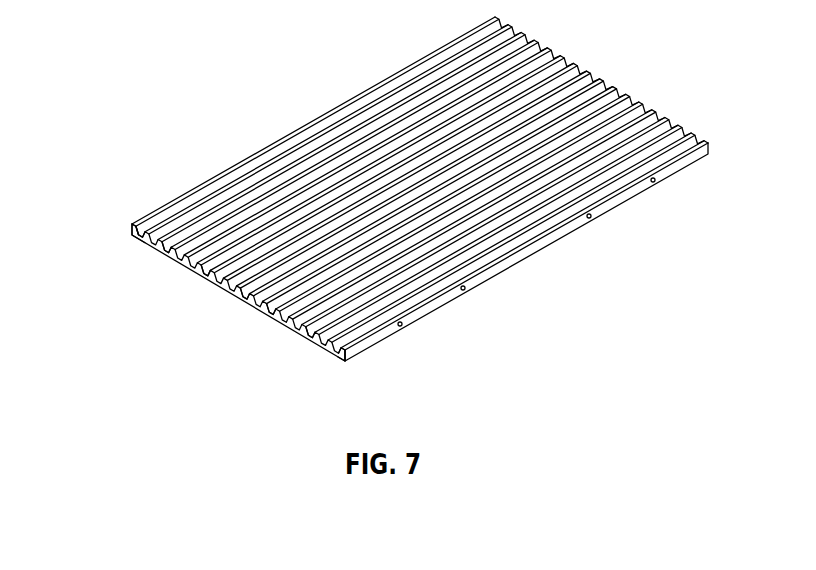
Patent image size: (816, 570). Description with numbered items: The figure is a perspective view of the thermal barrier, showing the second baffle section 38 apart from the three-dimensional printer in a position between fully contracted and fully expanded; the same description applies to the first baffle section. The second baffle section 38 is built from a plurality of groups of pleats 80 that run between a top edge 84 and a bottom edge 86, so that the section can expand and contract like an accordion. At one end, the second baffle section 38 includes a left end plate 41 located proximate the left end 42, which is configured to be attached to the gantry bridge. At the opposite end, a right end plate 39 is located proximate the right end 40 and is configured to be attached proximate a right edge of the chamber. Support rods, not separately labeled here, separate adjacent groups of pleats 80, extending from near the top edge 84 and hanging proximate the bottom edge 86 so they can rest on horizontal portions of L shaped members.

The second baffle section 38 is at (641, 56).
The right end plate 39 is at (607, 202).
The right end 40 is at (354, 357).
The left end plate 41 is at (130, 232).
The left end 42 is at (257, 157).
The groups of pleats 80 is at (128, 245).
The top edge 84 is at (435, 51).
The bottom edge 86 is at (413, 327).